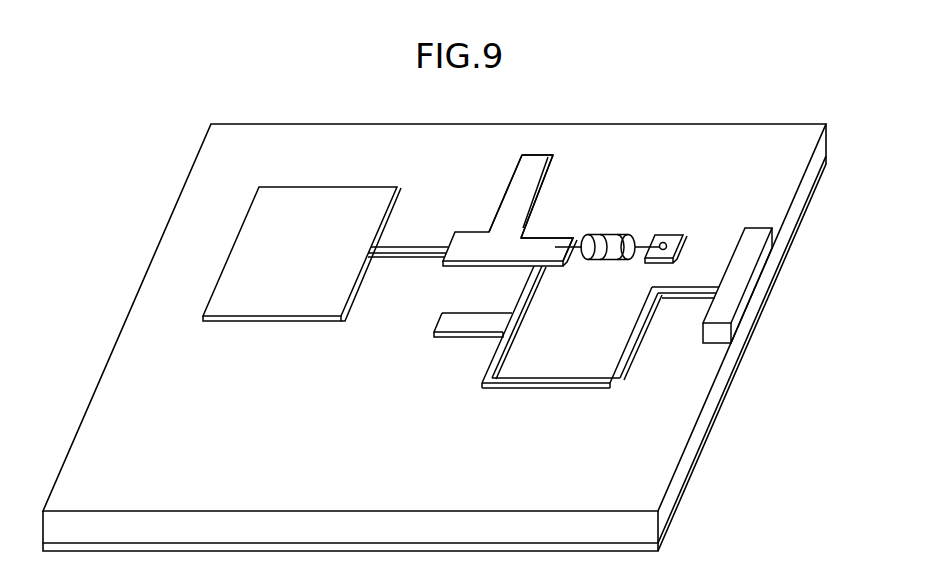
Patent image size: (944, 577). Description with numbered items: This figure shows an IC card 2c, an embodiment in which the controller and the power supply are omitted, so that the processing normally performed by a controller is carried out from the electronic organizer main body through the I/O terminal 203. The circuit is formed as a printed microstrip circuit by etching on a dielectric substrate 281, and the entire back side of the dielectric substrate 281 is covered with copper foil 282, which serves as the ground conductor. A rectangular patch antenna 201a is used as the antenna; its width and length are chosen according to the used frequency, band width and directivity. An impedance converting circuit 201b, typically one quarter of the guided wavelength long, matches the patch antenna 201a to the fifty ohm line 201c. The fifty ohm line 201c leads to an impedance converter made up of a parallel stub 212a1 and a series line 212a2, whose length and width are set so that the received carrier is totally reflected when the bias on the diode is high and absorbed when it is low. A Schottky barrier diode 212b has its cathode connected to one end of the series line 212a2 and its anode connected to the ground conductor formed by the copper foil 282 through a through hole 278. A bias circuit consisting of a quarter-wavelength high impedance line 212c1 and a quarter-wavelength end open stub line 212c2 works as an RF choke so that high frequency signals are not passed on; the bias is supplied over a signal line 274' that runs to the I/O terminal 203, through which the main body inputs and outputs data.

The IC card 2c is at (704, 108).
The patch antenna 201a is at (295, 300).
The impedance converting circuit 201b is at (414, 247).
The 50 Ω line 201c is at (470, 252).
The parallel stub 212a1 is at (533, 168).
The series line 212a2 is at (540, 240).
The Schottky barrier diode 212b is at (602, 262).
The high impedance line 212c1 is at (525, 298).
The end open stub line 212c2 is at (470, 323).
The signal line 274' is at (600, 365).
The through hole 278 is at (662, 236).
The I/O terminal 203 is at (753, 240).
The dielectric substrate 281 is at (655, 447).
The copper foil 282 is at (655, 549).